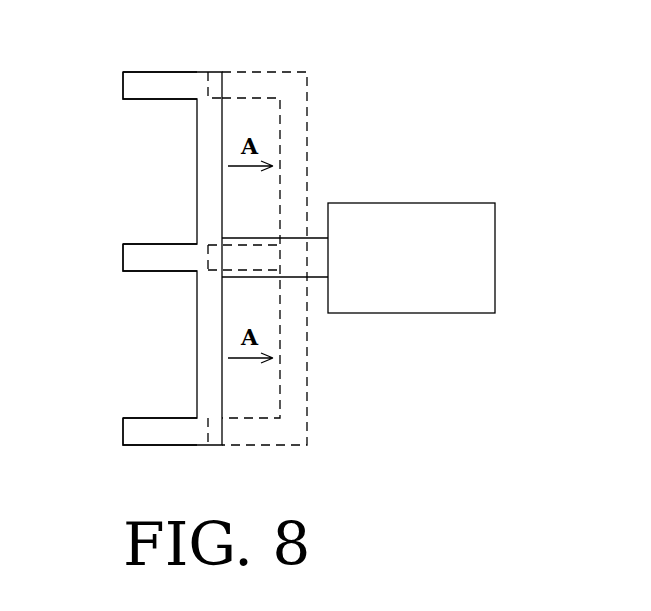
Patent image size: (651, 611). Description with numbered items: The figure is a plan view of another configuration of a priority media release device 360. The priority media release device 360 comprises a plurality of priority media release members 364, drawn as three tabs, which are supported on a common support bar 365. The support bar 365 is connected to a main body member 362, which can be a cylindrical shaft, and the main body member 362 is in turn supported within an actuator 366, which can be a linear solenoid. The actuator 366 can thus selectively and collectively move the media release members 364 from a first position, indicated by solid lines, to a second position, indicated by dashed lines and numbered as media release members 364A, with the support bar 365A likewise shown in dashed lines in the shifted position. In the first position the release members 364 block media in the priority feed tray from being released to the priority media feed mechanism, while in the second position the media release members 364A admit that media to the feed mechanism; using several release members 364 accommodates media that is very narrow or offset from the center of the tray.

The priority media release device 360 is at (427, 135).
The main body member 362 is at (254, 238).
The priority media release members 364 is at (133, 82).
The media release members in second position 364A is at (250, 82).
The support bar 365 is at (205, 173).
The support bar in second position 365A is at (293, 372).
The actuator 366 is at (495, 255).